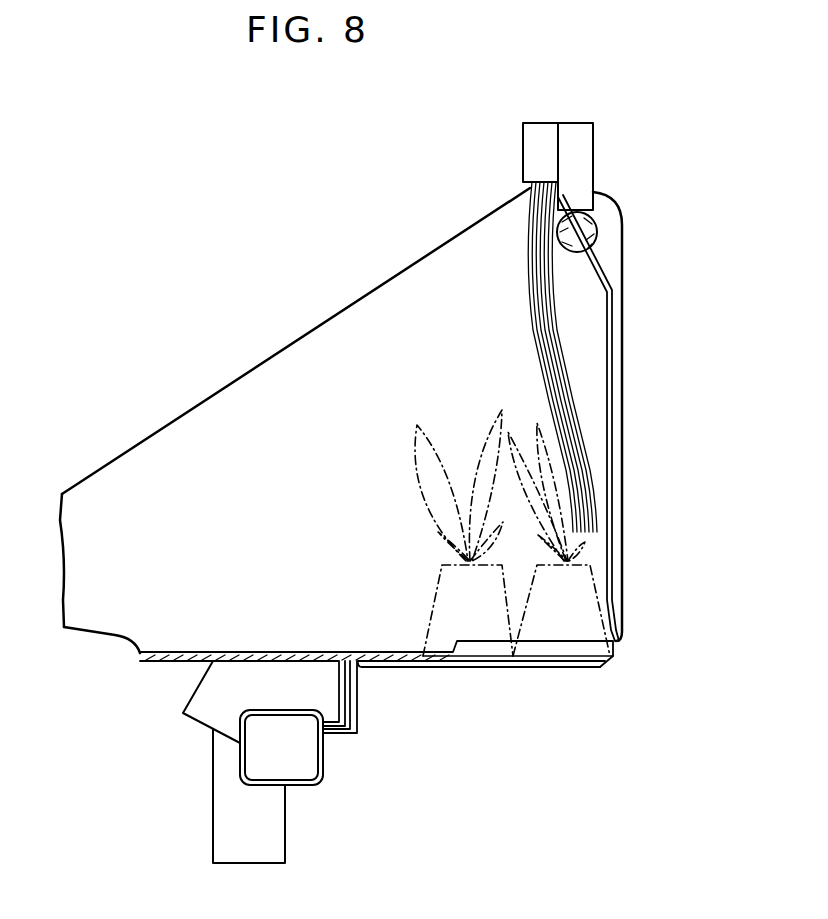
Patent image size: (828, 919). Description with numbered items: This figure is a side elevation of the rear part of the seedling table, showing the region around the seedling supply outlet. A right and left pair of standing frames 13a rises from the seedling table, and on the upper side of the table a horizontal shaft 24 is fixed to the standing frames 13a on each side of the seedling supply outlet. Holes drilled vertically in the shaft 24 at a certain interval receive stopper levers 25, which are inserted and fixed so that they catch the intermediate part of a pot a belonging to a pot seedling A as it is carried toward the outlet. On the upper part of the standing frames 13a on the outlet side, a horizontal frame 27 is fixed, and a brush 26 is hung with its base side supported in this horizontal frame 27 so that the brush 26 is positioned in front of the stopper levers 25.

The standing frame 13a is at (394, 277).
The horizontal shaft 24 is at (600, 227).
The stopper lever 25 is at (618, 360).
The brush 26 is at (568, 350).
The horizontal frame 27 is at (597, 143).
The pot seedling A is at (425, 558).
The pot a is at (437, 602).